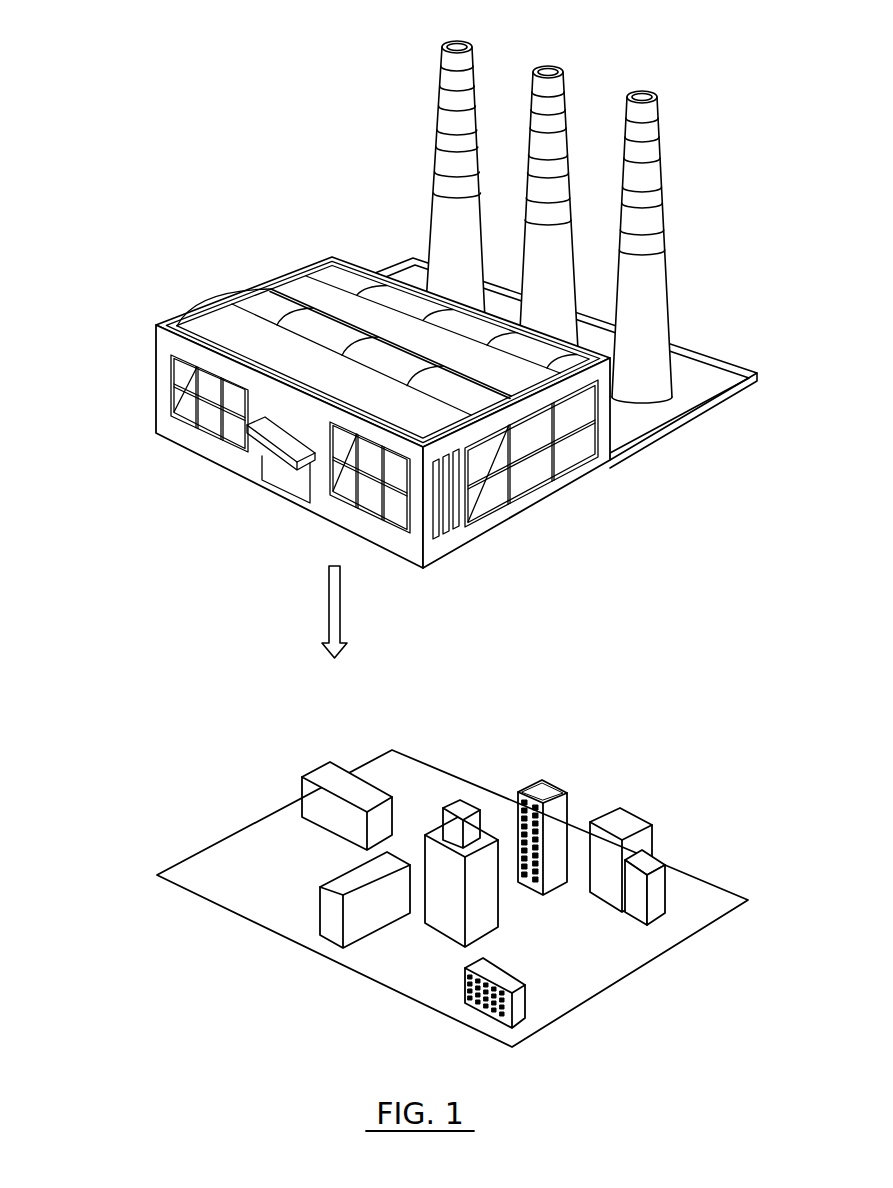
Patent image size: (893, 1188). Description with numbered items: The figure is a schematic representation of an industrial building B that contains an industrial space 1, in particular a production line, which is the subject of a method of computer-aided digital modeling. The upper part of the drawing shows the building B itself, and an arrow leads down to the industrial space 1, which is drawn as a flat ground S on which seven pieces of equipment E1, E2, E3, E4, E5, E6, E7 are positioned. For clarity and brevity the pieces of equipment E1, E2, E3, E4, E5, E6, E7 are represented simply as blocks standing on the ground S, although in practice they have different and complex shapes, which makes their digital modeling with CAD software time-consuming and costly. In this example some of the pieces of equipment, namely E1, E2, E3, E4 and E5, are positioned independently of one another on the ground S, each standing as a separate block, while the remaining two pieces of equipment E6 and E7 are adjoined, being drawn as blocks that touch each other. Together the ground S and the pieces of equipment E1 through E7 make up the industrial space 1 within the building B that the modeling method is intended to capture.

The industrial building B is at (164, 283).
The industrial space 1 is at (205, 796).
The ground S is at (600, 937).
The piece of equipment E1 is at (362, 797).
The piece of equipment E2 is at (338, 883).
The piece of equipment E3 is at (462, 805).
The piece of equipment E4 is at (533, 792).
The piece of equipment E5 is at (505, 978).
The piece of equipment E6 is at (617, 823).
The piece of equipment E7 is at (647, 858).